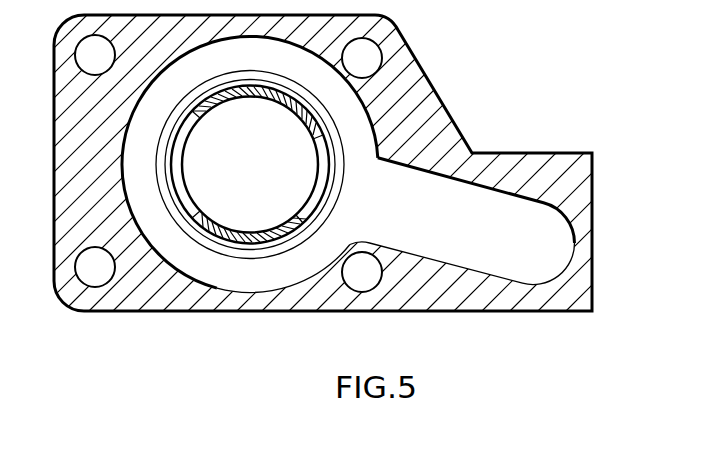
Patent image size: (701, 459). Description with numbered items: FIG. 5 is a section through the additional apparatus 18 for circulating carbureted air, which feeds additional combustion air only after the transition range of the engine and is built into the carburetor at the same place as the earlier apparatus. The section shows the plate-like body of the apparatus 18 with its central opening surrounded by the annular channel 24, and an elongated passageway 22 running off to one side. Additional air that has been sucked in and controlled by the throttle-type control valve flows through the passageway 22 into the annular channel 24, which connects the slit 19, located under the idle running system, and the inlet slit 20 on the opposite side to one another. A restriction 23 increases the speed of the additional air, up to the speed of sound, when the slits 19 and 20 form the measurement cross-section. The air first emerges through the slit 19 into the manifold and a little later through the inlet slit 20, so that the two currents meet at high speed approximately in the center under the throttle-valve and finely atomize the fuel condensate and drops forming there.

The apparatus 18 is at (398, 85).
The slit 19 is at (312, 208).
The inlet slit 20 is at (178, 190).
The passageway 22 is at (515, 265).
The restriction 23 is at (267, 248).
The annular channel 24 is at (193, 265).